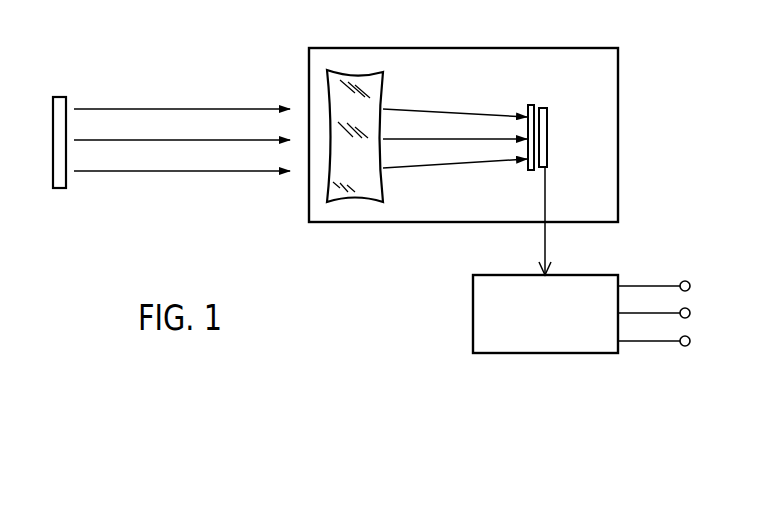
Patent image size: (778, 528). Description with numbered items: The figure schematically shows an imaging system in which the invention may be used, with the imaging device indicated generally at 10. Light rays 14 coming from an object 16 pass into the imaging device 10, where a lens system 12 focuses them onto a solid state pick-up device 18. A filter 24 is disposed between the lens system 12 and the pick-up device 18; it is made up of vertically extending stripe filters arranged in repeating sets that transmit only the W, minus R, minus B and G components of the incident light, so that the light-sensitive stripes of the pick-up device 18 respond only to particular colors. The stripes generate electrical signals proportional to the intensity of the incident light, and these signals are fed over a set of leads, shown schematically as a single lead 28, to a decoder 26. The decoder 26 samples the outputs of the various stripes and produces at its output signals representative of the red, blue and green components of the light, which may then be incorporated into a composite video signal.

The imaging device 10 is at (466, 48).
The lens system 12 is at (378, 70).
The light rays 14 is at (167, 173).
The object 16 is at (53, 163).
The solid state pick-up device 18 is at (548, 118).
The filter 24 is at (530, 105).
The decoder 26 is at (473, 337).
The lead 28 is at (543, 250).